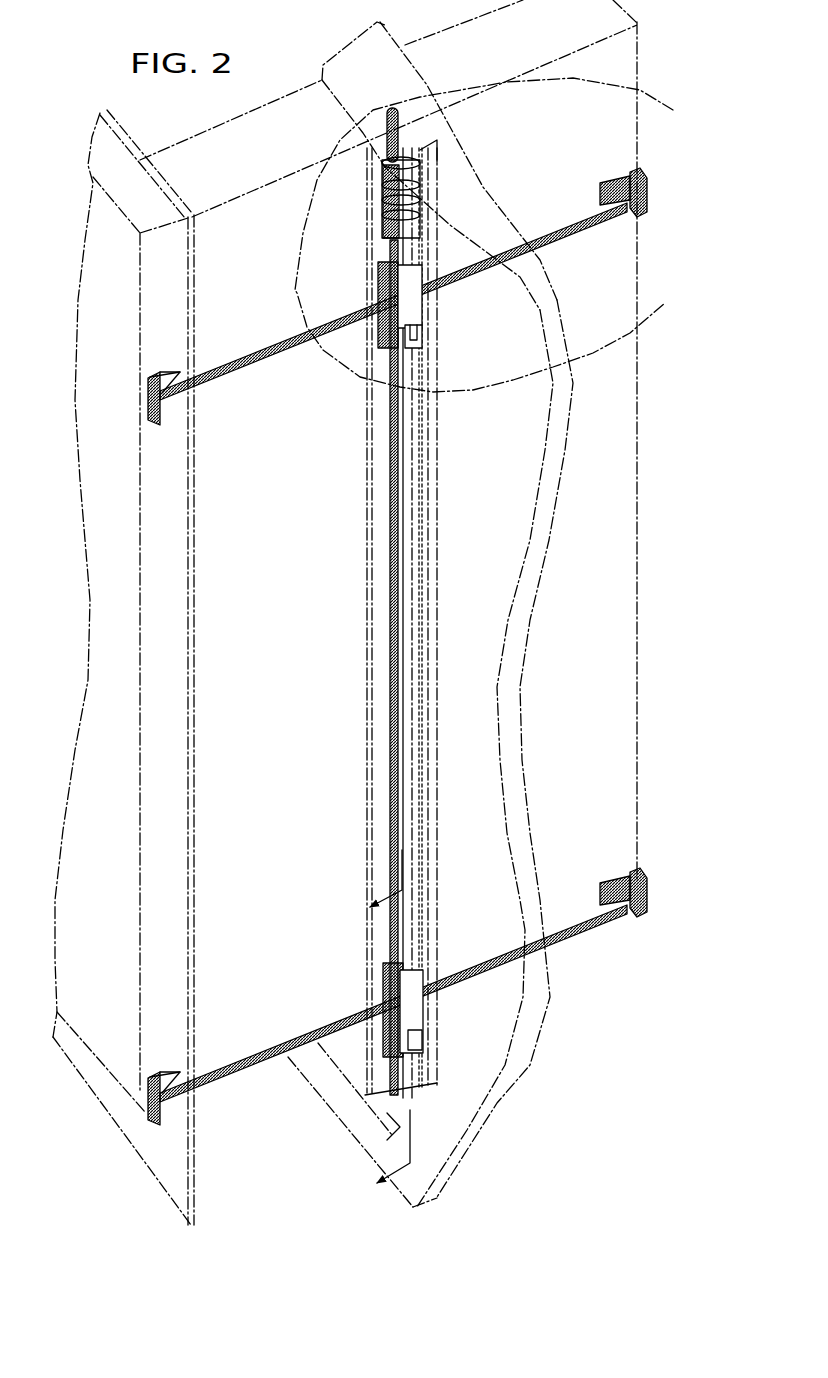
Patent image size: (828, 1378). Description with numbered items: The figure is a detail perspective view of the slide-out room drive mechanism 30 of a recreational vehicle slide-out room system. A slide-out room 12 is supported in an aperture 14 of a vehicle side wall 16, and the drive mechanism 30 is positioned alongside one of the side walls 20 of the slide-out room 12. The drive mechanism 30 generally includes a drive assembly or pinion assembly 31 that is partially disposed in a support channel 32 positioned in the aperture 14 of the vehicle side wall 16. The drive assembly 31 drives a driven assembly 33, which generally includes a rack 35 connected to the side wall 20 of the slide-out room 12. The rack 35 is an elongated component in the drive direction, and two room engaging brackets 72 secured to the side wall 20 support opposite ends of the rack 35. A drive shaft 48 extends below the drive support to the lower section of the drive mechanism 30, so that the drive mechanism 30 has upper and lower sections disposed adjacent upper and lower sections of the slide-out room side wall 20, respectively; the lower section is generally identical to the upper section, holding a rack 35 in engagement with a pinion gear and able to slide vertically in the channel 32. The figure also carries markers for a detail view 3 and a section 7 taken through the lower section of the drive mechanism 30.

The detail view circle / section line 3 is at (660, 102).
The section line 7 is at (379, 1026).
The slide-out room 12 is at (638, 402).
The aperture 14 is at (343, 110).
The vehicle side wall 16 is at (522, 705).
The side wall 20 is at (294, 645).
The slide-out room drive mechanism 30 is at (303, 200).
The drive assembly 31 is at (345, 288).
The support channel 32 is at (430, 352).
The driven assembly 33 is at (551, 221).
The rack 35 is at (587, 230).
The drive shaft 48 is at (390, 540).
The room engaging brackets 72 is at (643, 195).